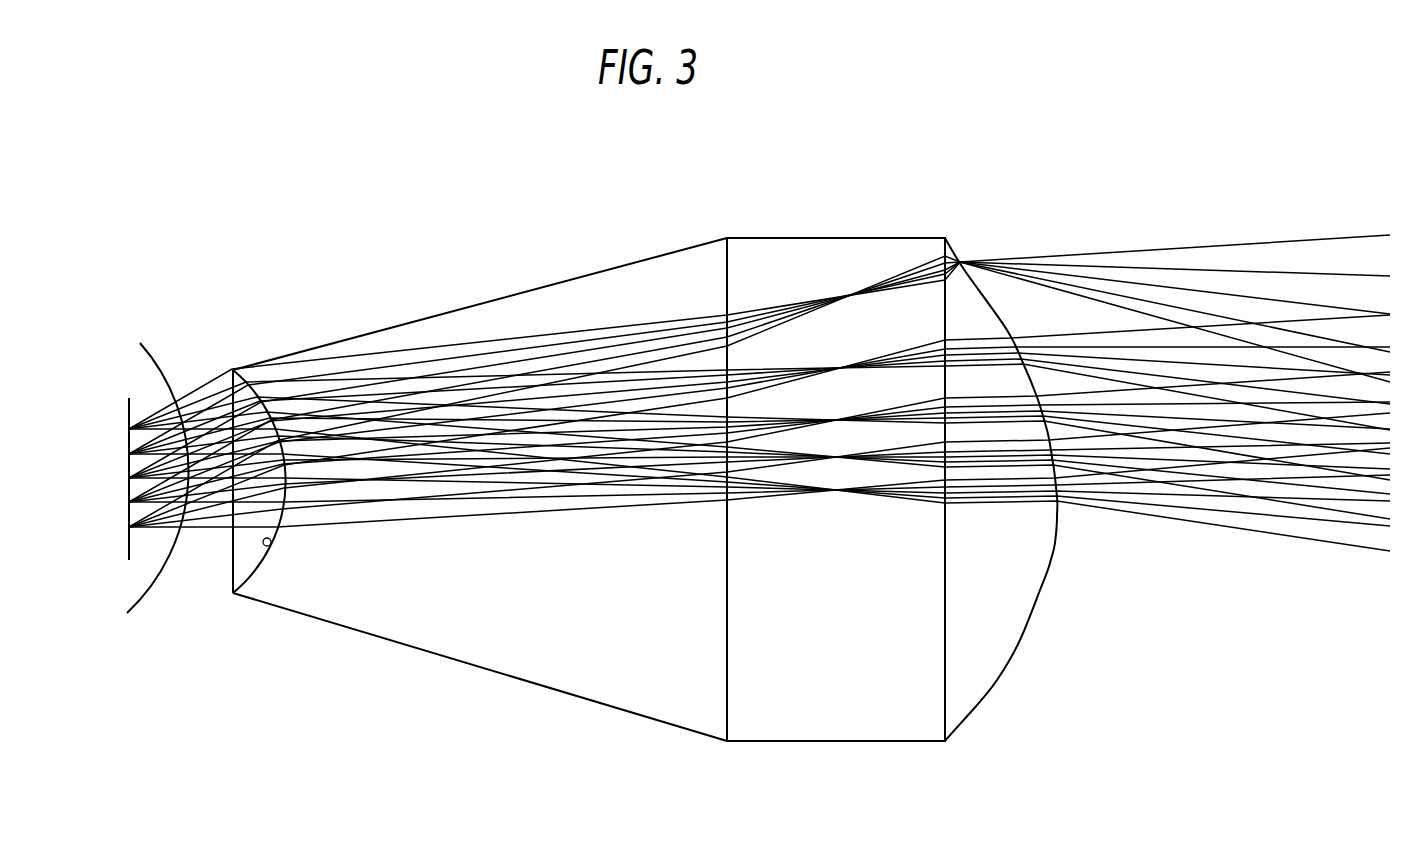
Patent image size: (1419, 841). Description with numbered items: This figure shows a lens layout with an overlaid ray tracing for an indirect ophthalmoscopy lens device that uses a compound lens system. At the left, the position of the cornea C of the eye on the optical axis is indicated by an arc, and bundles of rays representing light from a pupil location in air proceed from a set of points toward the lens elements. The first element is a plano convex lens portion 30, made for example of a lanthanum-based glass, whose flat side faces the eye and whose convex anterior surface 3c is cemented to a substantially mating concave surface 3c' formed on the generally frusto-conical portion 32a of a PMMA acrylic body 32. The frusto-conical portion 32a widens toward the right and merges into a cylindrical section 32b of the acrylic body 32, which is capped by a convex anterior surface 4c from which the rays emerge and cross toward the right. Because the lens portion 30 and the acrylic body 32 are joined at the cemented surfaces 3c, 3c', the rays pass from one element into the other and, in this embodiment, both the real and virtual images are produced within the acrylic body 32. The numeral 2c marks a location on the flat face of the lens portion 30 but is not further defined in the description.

The cornea C is at (147, 350).
The plano convex lens portion 30 is at (262, 493).
The light source unit 2c is at (232, 578).
The convex anterior surface 3c is at (275, 603).
The concave surface 3c' is at (295, 528).
The PMMA acrylic body 32 is at (589, 434).
The frusto-conical portion 32a is at (555, 305).
The cylindrical section 32b is at (818, 253).
The convex anterior surface 4c is at (1022, 644).